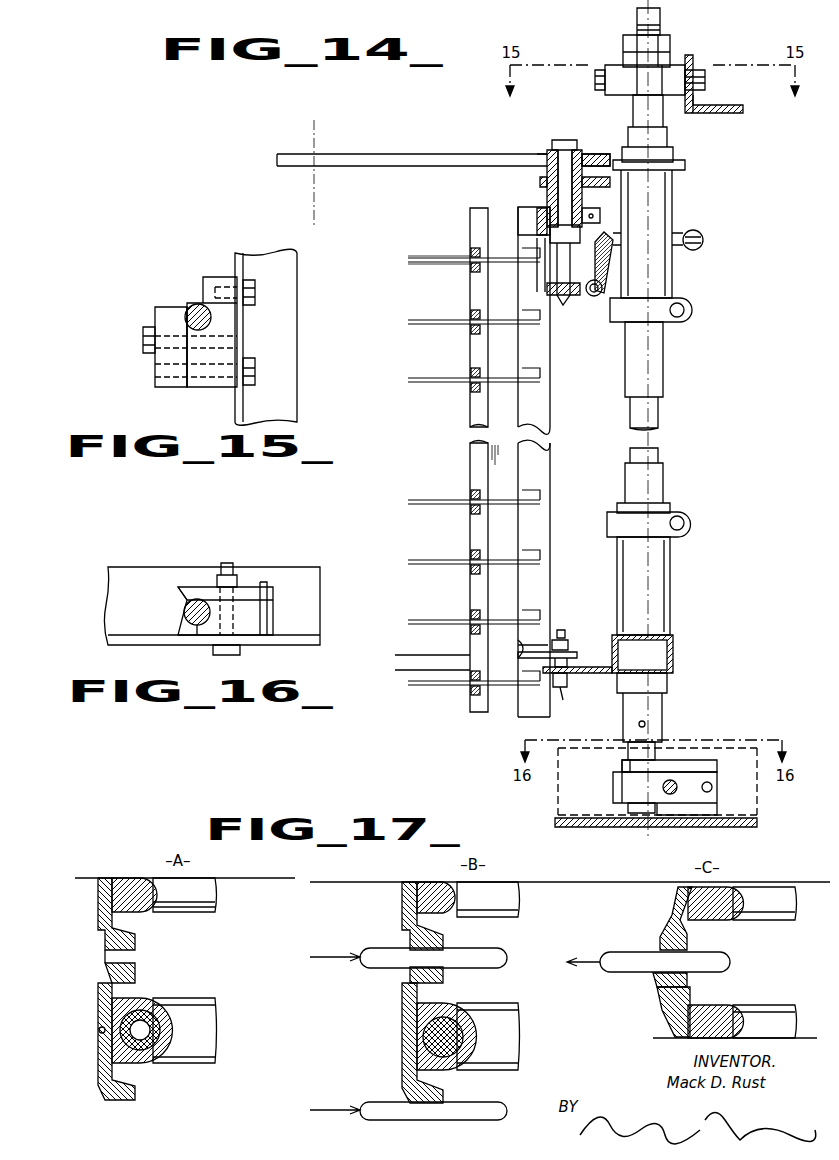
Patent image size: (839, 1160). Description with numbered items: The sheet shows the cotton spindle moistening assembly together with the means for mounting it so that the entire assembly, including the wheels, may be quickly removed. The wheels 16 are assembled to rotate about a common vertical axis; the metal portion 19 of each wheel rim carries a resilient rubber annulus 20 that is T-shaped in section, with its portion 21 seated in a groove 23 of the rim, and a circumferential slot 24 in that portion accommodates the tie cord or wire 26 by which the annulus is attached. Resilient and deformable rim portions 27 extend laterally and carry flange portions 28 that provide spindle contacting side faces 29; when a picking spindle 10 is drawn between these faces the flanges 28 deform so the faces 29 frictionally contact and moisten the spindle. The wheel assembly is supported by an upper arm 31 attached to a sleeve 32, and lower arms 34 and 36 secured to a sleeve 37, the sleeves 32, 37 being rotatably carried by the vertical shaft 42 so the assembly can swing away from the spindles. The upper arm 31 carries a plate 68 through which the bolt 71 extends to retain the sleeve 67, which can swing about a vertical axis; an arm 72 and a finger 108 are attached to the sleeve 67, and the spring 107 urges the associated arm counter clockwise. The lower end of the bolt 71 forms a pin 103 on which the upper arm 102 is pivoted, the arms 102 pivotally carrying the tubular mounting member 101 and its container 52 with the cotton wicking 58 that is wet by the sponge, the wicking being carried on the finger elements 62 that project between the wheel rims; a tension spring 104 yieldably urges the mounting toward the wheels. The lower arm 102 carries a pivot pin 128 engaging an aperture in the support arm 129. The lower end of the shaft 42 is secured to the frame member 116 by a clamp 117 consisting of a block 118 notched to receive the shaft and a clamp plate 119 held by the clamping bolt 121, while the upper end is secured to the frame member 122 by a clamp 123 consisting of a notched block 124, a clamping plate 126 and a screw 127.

In FIG. 17, the picking spindle 10 is at (365, 968).
In FIG. 17, the wheel 16 is at (203, 914).
In FIG. 17, the metal portion of the wheel rim 19 is at (150, 912).
In FIG. 17, the annulus 20 is at (98, 910).
In FIG. 17, the portion of the annulus 21 is at (148, 1010).
In FIG. 17, the groove 23 is at (130, 1060).
In FIG. 17, the circumferential slot 24 is at (100, 1030).
In FIG. 17, the tie cord or wire 26 is at (112, 1038).
In FIG. 17, the resilient and deformable rim portion 27 is at (98, 985).
In FIG. 17, the flange portion 28 is at (135, 968).
In FIG. 17, the spindle contacting side face 29 is at (110, 955).
In FIG. 14, the upper arm 31 is at (448, 155).
In FIG. 14, the sleeve 32 is at (673, 286).
In FIG. 14, the arm 34 is at (432, 683).
In FIG. 14, the arm 36 is at (673, 652).
In FIG. 14, the sleeve 37 is at (657, 368).
In FIG. 14, the vertical shaft 42 is at (634, 110).
In FIG. 15, the vertical shaft 42 is at (190, 305).
In FIG. 16, the vertical shaft 42 is at (184, 608).
In FIG. 14, the container 52 is at (470, 464).
In FIG. 14, the wicking 58 is at (446, 264).
In FIG. 14, the tine 62 is at (412, 264).
In FIG. 14, the sleeve 67 is at (540, 196).
In FIG. 14, the plate 68 is at (548, 150).
In FIG. 14, the bolt 71 is at (574, 140).
In FIG. 14, the arm 72 is at (540, 182).
In FIG. 14, the tubular mounting member 101 is at (551, 412).
In FIG. 14, the arm 102 is at (578, 650).
In FIG. 14, the pin 103 is at (563, 305).
In FIG. 14, the tension spring 104 is at (604, 232).
In FIG. 14, the spring 107 is at (700, 233).
In FIG. 14, the finger 108 is at (530, 222).
In FIG. 14, the frame member 116 is at (598, 828).
In FIG. 16, the frame member 116 is at (128, 567).
In FIG. 14, the clamp 117 is at (712, 760).
In FIG. 16, the clamp 117 is at (283, 618).
In FIG. 14, the block 118 is at (613, 787).
In FIG. 16, the block 118 is at (186, 640).
In FIG. 14, the clamp plate 119 is at (622, 766).
In FIG. 16, the clamp plate 119 is at (186, 590).
In FIG. 14, the clamping bolt 121 is at (672, 780).
In FIG. 16, the clamping bolt 121 is at (232, 565).
In FIG. 14, the frame member 122 is at (723, 110).
In FIG. 15, the frame member 122 is at (285, 352).
In FIG. 14, the clamp 123 is at (684, 54).
In FIG. 15, the clamp 123 is at (197, 396).
In FIG. 14, the notched block 124 is at (673, 100).
In FIG. 15, the notched block 124 is at (233, 327).
In FIG. 14, the clamping plate 126 is at (612, 66).
In FIG. 15, the clamping plate 126 is at (155, 380).
In FIG. 14, the screw 127 is at (594, 85).
In FIG. 15, the screw 127 is at (143, 352).
In FIG. 14, the pivot pin 128 is at (563, 690).
In FIG. 14, the support arm 129 is at (588, 675).